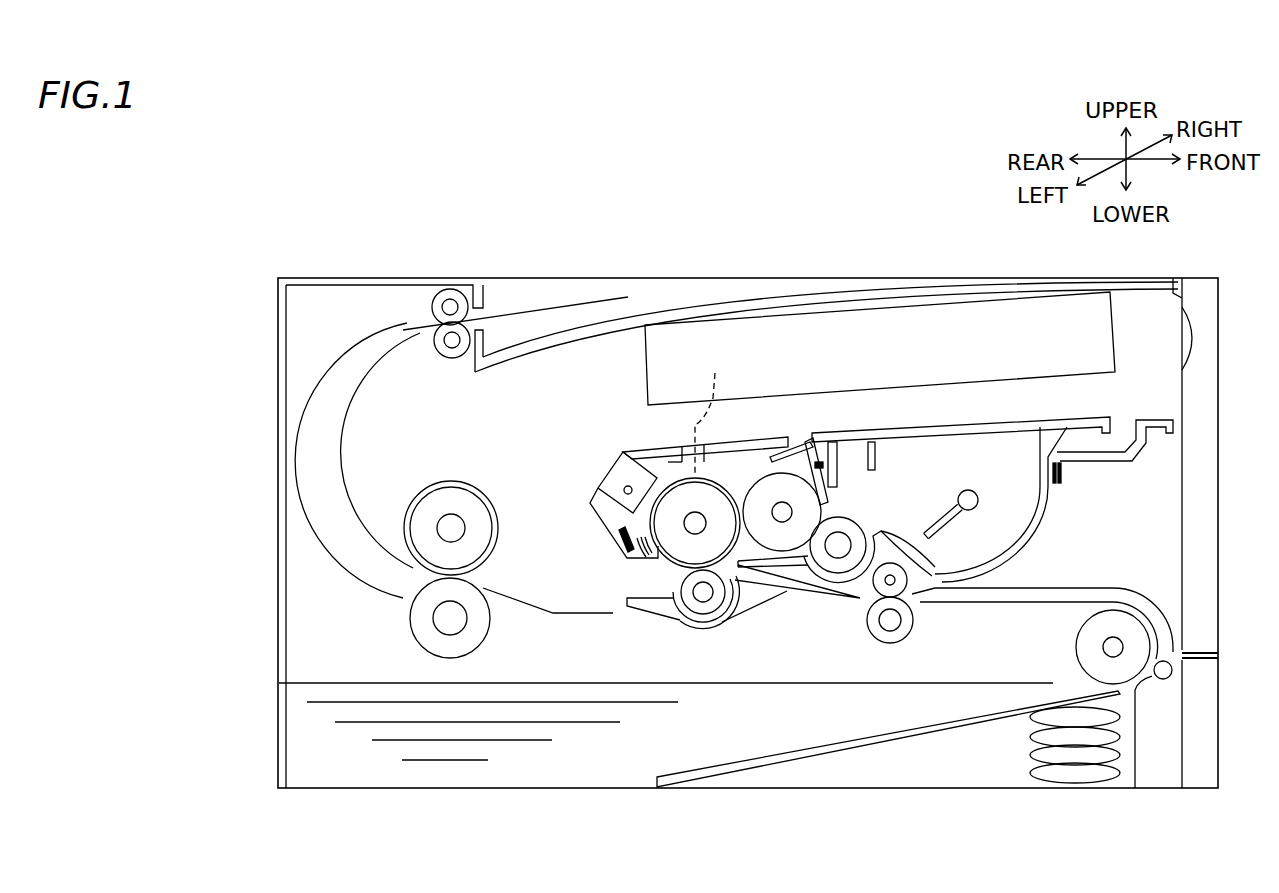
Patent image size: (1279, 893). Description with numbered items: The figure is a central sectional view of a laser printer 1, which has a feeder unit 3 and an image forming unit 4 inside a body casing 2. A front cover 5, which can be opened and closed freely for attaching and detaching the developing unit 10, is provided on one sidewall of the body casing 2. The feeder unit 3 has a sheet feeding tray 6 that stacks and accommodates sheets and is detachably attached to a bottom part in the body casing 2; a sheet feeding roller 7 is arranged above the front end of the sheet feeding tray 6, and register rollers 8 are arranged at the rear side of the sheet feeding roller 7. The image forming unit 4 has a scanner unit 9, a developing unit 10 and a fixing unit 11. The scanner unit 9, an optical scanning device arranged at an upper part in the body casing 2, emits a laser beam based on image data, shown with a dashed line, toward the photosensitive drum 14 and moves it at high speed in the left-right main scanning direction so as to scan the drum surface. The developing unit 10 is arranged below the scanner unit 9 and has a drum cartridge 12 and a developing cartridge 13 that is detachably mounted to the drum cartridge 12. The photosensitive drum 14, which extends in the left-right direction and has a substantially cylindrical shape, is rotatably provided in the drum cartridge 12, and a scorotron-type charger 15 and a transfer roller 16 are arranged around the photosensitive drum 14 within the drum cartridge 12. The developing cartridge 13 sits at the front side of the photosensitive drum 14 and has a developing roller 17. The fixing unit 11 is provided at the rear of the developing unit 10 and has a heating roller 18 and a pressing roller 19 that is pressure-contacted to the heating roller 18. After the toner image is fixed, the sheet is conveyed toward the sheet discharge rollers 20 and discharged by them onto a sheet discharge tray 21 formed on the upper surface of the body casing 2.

The laser printer 1 is at (762, 858).
The body casing 2 is at (278, 470).
The feeder unit 3 is at (1173, 742).
The image forming unit 4 is at (1127, 400).
The front cover 5 is at (1218, 447).
The sheet feeding tray 6 is at (310, 692).
The sheet feeding roller 7 is at (1076, 645).
The register rollers 8 is at (891, 575).
The scanner unit 9 is at (990, 318).
The developing unit 10 is at (1077, 501).
The fixing unit 11 is at (419, 487).
The drum cartridge 12 is at (653, 630).
The developing cartridge 13 is at (935, 416).
The photosensitive drum 14 is at (667, 561).
The scorotron-type charger 15 is at (623, 473).
The transfer roller 16 is at (705, 614).
The developing roller 17 is at (785, 551).
The heating roller 18 is at (453, 487).
The pressing roller 19 is at (470, 635).
The sheet discharge rollers 20 is at (437, 300).
The sheet discharge tray 21 is at (652, 313).